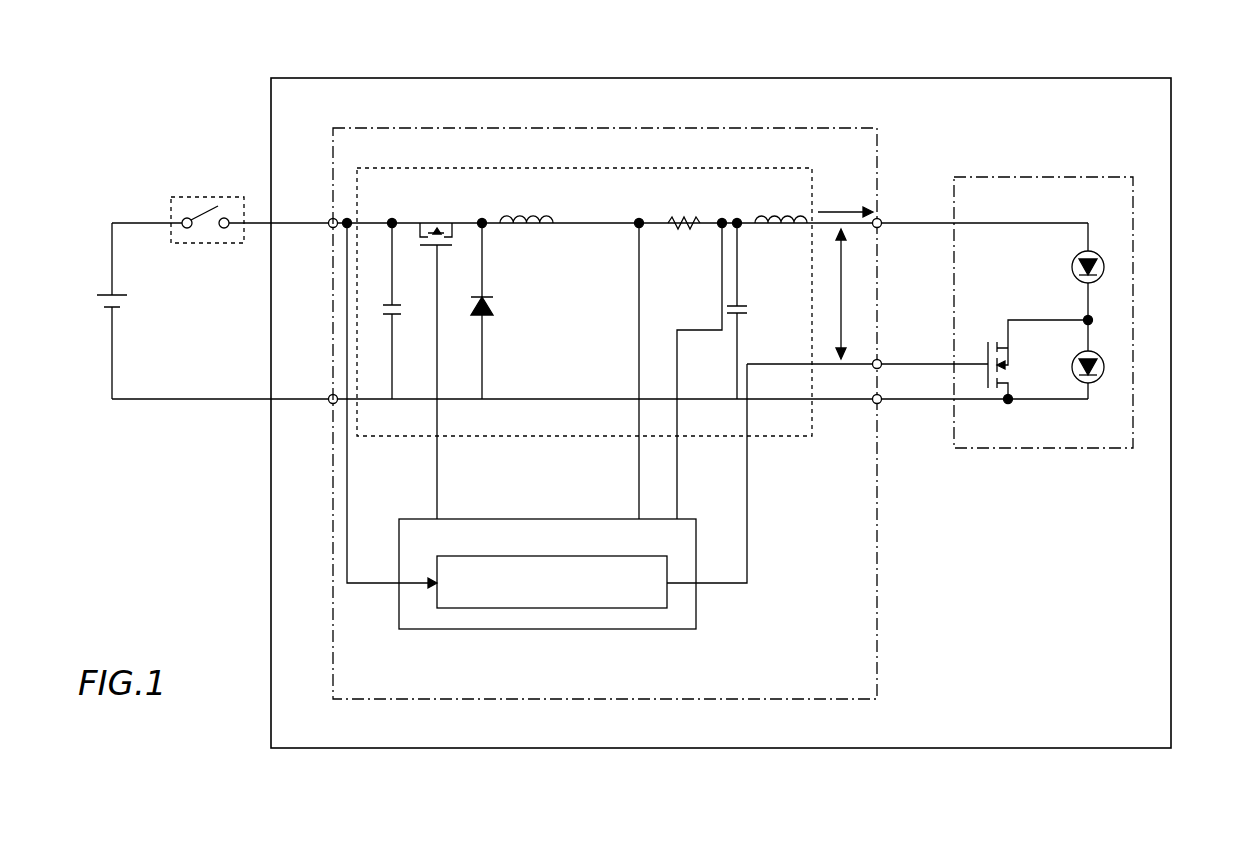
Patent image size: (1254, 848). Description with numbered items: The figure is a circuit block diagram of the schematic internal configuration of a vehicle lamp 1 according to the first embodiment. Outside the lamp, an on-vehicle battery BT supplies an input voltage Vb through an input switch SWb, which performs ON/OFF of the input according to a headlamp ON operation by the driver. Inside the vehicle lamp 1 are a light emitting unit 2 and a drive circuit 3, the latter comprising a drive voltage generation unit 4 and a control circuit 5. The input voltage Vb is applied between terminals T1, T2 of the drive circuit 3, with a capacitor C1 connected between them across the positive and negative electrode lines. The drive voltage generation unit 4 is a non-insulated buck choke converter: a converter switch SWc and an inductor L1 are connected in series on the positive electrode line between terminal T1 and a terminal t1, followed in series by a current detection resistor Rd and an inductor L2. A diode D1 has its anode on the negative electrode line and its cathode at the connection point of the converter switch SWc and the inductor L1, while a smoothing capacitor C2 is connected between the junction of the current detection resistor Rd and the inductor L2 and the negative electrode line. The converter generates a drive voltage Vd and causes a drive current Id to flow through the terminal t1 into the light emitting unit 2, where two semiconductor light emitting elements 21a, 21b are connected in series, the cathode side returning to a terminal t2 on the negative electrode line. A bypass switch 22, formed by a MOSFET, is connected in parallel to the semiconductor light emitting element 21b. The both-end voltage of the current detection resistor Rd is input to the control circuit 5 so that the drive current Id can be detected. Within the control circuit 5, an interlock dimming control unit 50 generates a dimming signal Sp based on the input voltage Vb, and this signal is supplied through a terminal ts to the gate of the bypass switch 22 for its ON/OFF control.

The vehicle lamp 1 is at (1065, 749).
The light emitting unit 2 is at (1087, 266).
The drive circuit 3 is at (800, 127).
The drive voltage generation unit 4 is at (814, 186).
The control circuit 5 is at (551, 605).
The interlock dimming control unit 50 is at (545, 609).
The semiconductor light emitting element 21a is at (1104, 258).
The semiconductor light emitting element 21b is at (1104, 358).
The bypass switch 22 is at (1022, 363).
The on-vehicle battery BT is at (103, 311).
The input switch SWb is at (226, 196).
The converter switch SWc is at (437, 359).
The terminal T1 is at (330, 219).
The terminal T2 is at (330, 403).
The input voltage Vb is at (344, 220).
The capacitor C1 is at (399, 309).
The capacitor C2 is at (746, 309).
The diode D1 is at (491, 309).
The inductor L1 is at (526, 236).
The inductor L2 is at (781, 236).
The current detection resistor Rd is at (697, 368).
The current Id is at (845, 202).
The drive voltage Vd is at (841, 294).
The dimming signal Sp is at (787, 368).
The terminal t1 is at (881, 228).
The terminal t2 is at (881, 403).
The terminal ts is at (881, 359).